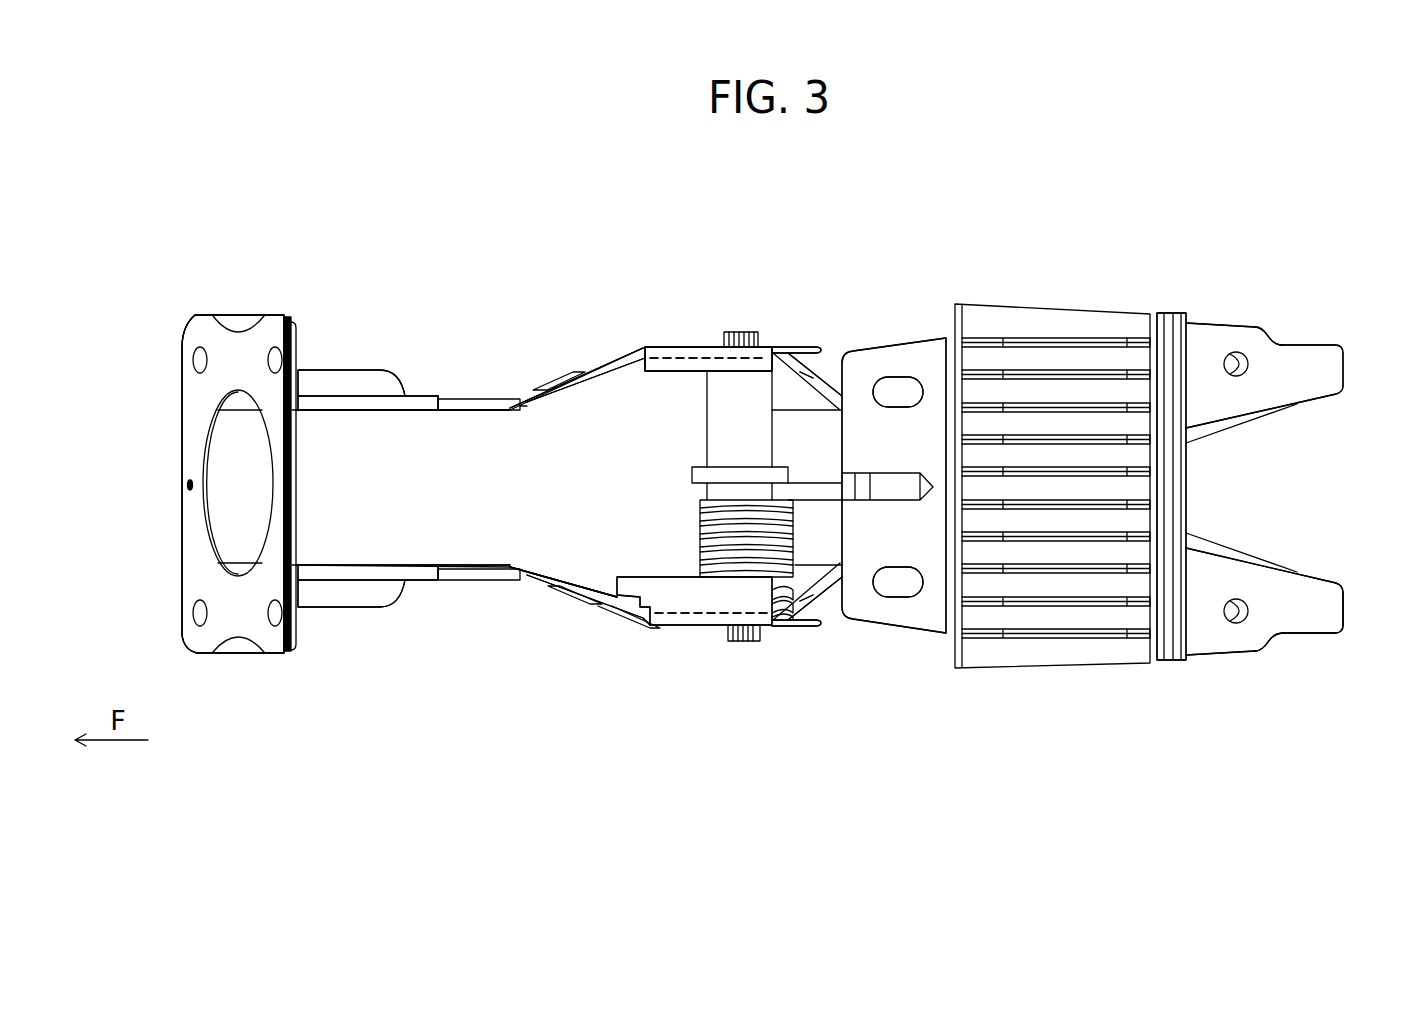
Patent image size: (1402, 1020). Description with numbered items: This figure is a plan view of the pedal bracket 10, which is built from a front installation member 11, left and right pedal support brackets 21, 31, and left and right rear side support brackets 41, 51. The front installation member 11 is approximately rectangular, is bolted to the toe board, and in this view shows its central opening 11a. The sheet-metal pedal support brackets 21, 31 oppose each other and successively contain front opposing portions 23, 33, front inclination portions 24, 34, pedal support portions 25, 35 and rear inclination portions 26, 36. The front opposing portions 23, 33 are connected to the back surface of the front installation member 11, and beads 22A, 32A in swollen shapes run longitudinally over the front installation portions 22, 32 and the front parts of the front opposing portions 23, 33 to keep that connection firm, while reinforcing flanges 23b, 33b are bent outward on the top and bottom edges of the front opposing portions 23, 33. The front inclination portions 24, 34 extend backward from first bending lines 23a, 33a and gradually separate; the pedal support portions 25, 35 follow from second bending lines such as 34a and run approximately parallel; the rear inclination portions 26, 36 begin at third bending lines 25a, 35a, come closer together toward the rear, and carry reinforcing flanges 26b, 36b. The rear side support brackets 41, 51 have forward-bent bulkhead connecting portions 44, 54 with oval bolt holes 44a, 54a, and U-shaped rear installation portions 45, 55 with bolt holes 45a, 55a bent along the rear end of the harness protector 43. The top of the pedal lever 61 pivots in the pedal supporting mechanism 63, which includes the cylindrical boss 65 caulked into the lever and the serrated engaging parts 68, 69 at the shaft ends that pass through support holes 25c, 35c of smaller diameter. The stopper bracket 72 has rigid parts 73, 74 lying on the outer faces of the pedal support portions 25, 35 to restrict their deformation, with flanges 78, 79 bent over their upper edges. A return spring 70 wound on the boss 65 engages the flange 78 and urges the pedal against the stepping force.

The pedal bracket 10 is at (572, 288).
The front installation member 11 is at (205, 660).
The flange opening 11a is at (218, 518).
The pedal support bracket 21 is at (470, 580).
The front installation portion 22 is at (240, 645).
The bead 22A is at (358, 600).
The front opposing portion 23 is at (455, 580).
The first bending line 23a is at (513, 578).
The reinforcing flange 23b is at (330, 585).
The front inclination portion 24 is at (570, 600).
The pedal support portion 25 is at (680, 635).
The third bending line 25a is at (792, 640).
The support hole 25c is at (690, 627).
The rear inclination portion 26 is at (795, 628).
The reinforcing flange 26b is at (815, 607).
The pedal support bracket 31 is at (488, 392).
The front installation portion 32 is at (248, 322).
The bead 32A is at (358, 372).
The front opposing portion 33 is at (455, 393).
The first bending line 33a is at (520, 405).
The reinforcing flange 33b is at (333, 393).
The front inclination portion 34 is at (580, 362).
The second bending line 34a is at (632, 350).
The pedal support portion 35 is at (672, 355).
The third bending line 35a is at (788, 348).
The support hole 35c is at (708, 355).
The rear inclination portion 36 is at (812, 380).
The reinforcing flange 36b is at (840, 390).
The rear side support bracket 41 is at (1291, 655).
The harness protector 43 is at (1055, 668).
The bulkhead connecting portion 44 is at (930, 625).
The bolt hole 44a is at (883, 598).
The rear installation portion 45 is at (1320, 625).
The bolt hole 45a is at (1243, 634).
The rear side support bracket 51 is at (1254, 316).
The bulkhead connecting portion 54 is at (918, 345).
The bolt hole 54a is at (882, 378).
The rear installation portion 55 is at (1285, 340).
The bolt hole 55a is at (1237, 352).
The pedal lever 61 is at (692, 472).
The pedal supporting mechanism 63 is at (755, 296).
The cylindrical boss 65 is at (707, 430).
The engaging part 68 is at (740, 644).
The engaging part 69 is at (738, 332).
The return spring 70 is at (700, 530).
The stopper bracket 72 is at (615, 624).
The rigid part 73 is at (645, 634).
The rigid part 74 is at (660, 350).
The flange 78 is at (655, 590).
The flange 79 is at (668, 365).